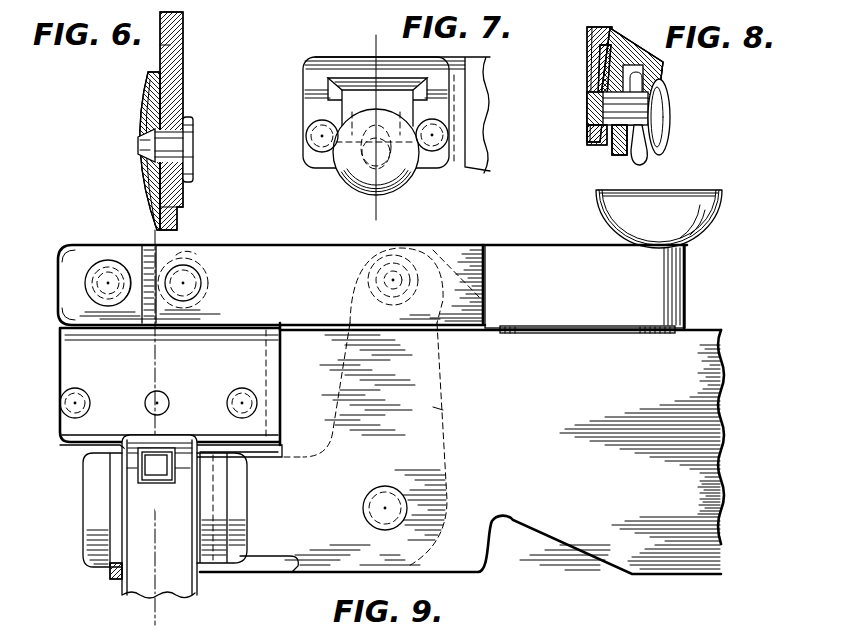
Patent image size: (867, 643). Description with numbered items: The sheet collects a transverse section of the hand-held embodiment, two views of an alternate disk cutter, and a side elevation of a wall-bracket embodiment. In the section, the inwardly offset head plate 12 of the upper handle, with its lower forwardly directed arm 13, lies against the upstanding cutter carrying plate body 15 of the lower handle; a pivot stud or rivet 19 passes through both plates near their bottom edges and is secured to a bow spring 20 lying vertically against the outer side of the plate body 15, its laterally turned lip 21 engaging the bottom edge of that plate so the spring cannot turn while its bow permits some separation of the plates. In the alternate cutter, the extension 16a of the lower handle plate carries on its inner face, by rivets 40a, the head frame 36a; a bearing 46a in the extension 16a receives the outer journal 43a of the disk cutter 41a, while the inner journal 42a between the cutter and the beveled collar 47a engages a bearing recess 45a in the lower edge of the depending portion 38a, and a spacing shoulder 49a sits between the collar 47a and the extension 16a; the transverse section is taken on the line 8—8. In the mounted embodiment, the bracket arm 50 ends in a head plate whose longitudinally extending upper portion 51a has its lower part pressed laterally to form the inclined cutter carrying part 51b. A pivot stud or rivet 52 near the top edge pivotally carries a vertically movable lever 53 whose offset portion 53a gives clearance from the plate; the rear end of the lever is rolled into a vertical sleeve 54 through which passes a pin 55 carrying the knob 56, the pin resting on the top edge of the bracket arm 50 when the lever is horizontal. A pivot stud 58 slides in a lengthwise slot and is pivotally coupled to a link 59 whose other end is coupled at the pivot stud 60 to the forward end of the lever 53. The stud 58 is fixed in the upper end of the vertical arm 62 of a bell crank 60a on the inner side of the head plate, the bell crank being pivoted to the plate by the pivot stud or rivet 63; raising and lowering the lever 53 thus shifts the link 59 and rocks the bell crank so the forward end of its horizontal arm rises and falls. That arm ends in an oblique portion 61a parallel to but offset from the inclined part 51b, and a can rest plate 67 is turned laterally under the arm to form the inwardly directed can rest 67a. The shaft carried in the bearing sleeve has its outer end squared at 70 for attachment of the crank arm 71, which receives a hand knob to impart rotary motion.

In FIG. 6, the head plate 12 is at (185, 67).
In FIG. 9, the lower forwardly directed arm 13 is at (153, 237).
In FIG. 6, the cutter carrying plate body 15 is at (160, 53).
In FIG. 6, the pivot stud or rivet 19 is at (172, 146).
In FIG. 6, the bow spring 20 is at (140, 103).
In FIG. 6, the laterally turned lip 21 is at (178, 223).
In FIG. 7, the section line 8— 8 is at (374, 38).
In FIG. 7, the extension of the lower handle plate 16a is at (313, 60).
In FIG. 8, the extension of the lower handle plate 16a is at (606, 62).
In FIG. 8, the head frame 36a is at (639, 50).
In FIG. 7, the depending portion of the head frame 38a is at (397, 83).
In FIG. 8, the depending portion of the head frame 38a is at (661, 88).
In FIG. 7, the rivets 40a is at (310, 142).
In FIG. 7, the disk cutter 41a is at (407, 192).
In FIG. 8, the disk cutter 41a is at (668, 107).
In FIG. 7, the inner journal 42a is at (345, 177).
In FIG. 8, the inner journal 42a is at (648, 158).
In FIG. 8, the journal 43a is at (598, 108).
In FIG. 7, the bearing recess 45a is at (376, 140).
In FIG. 8, the bearing recess 45a is at (636, 122).
In FIG. 8, the bearing 46a is at (598, 82).
In FIG. 8, the collar 47a is at (614, 147).
In FIG. 8, the spacing shoulder 49a is at (616, 124).
In FIG. 9, the bracket arm 50 is at (675, 550).
In FIG. 9, the longitudinally extending upper portion 51a is at (72, 245).
In FIG. 9, the inclined cutter carrying part 51b is at (85, 355).
In FIG. 9, the pivot stud or rivet 52 is at (90, 288).
In FIG. 9, the vertically movable lever 53 is at (540, 303).
In FIG. 9, the offset portion of the lever 53a is at (465, 313).
In FIG. 9, the vertical sleeve 54 is at (686, 290).
In FIG. 9, the pin 55 is at (662, 333).
In FIG. 9, the knob 56 is at (723, 197).
In FIG. 9, the pivot stud 58 is at (408, 247).
In FIG. 9, the link 59 is at (197, 250).
In FIG. 9, the pivot stud 60 is at (197, 283).
In FIG. 9, the bell crank 60a is at (449, 433).
In FIG. 9, the oblique portion of the bell crank arm 61a is at (92, 535).
In FIG. 9, the vertical arm 62 is at (447, 411).
In FIG. 9, the pivot stud or rivet 63 is at (385, 508).
In FIG. 9, the can rest plate 67 is at (110, 492).
In FIG. 9, the can rest 67a is at (113, 583).
In FIG. 9, the squared outer end of the shaft 70 is at (153, 473).
In FIG. 9, the crank arm 71 is at (193, 593).